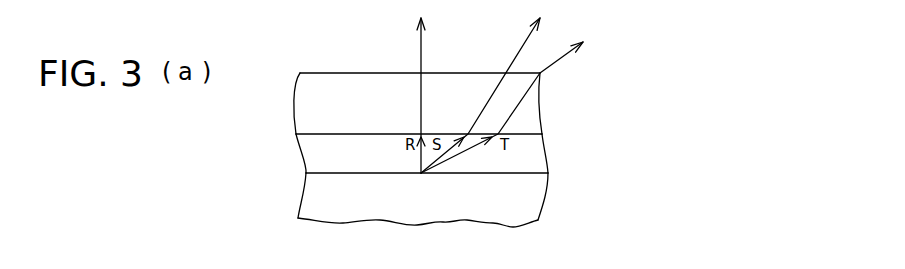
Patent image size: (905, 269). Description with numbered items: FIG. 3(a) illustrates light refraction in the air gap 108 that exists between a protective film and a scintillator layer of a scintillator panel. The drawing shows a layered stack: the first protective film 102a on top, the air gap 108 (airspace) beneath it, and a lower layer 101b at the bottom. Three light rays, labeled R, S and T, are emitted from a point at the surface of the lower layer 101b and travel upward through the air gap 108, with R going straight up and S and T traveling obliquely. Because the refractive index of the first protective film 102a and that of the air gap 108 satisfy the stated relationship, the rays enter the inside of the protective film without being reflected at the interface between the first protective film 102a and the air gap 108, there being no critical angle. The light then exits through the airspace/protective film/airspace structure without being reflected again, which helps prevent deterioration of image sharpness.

The first protective film 102a is at (538, 104).
The air gap 108 is at (536, 156).
The lower substrate layer 101b is at (535, 203).